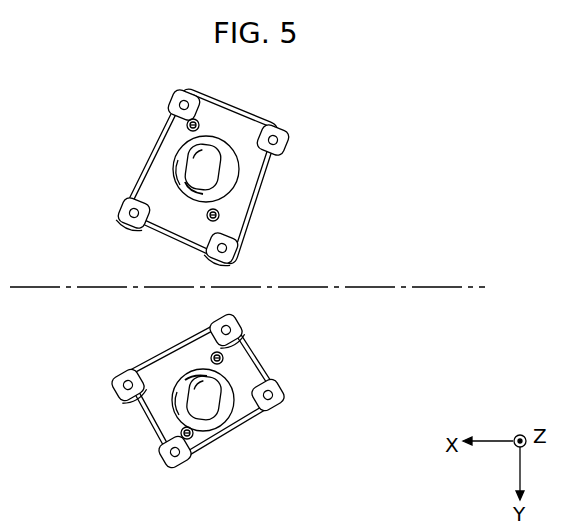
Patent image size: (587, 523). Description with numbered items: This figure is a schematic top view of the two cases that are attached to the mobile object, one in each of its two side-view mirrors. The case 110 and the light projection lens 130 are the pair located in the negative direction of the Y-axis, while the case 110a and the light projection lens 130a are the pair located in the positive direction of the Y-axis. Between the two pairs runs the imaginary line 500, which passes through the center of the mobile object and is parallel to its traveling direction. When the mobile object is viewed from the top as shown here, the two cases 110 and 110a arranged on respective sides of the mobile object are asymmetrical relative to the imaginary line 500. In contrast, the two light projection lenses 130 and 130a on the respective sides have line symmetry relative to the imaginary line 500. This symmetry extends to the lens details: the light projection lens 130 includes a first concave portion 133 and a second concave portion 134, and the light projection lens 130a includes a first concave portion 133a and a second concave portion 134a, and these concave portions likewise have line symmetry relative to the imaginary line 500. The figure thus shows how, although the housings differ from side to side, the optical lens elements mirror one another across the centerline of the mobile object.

The case 110 is at (171, 128).
The light projection lens 130 is at (178, 168).
The first concave portion 133 is at (220, 170).
The second concave portion 134 is at (190, 203).
The imaginary line 500 is at (445, 285).
The case 110a is at (117, 393).
The light projection lens 130a is at (175, 407).
The first concave portion 133a is at (216, 400).
The second concave portion 134a is at (182, 378).